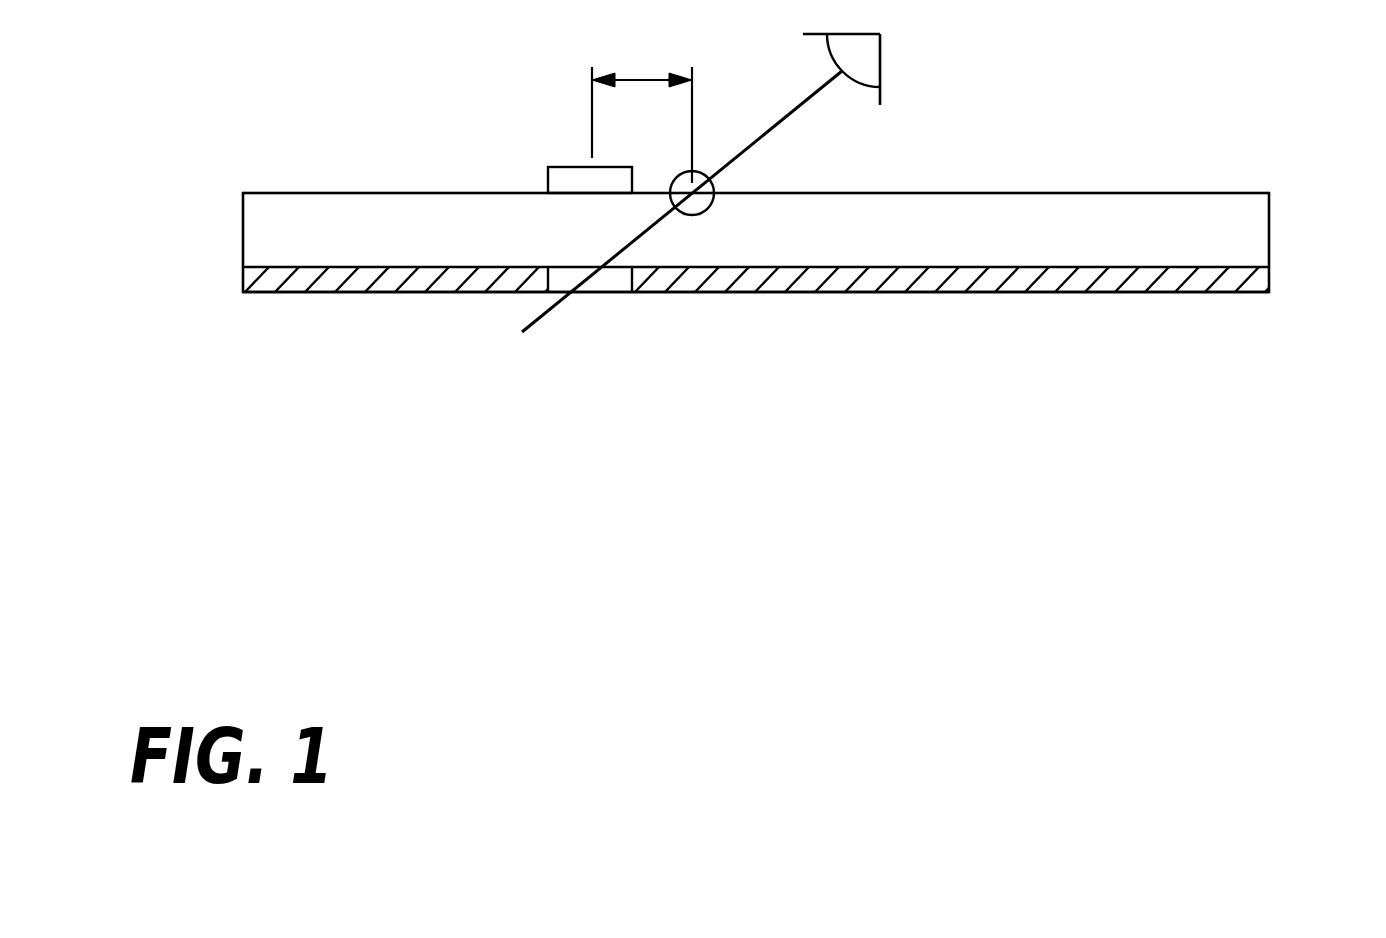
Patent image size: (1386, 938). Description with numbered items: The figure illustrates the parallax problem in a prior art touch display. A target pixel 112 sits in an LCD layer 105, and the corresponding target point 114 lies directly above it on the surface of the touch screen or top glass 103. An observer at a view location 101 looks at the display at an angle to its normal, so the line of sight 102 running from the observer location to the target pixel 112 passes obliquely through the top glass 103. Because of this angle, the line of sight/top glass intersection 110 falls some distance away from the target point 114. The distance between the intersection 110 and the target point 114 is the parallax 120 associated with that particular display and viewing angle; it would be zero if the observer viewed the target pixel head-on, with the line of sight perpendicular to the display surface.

The view location 101 is at (900, 34).
The line of sight 102 is at (778, 117).
The top glass 103 is at (1269, 230).
The LCD layer 105 is at (1269, 280).
The line of sight/top glass intersection 110 is at (713, 182).
The target pixel 112 is at (597, 292).
The target point 114 is at (581, 166).
The parallax 120 is at (638, 67).